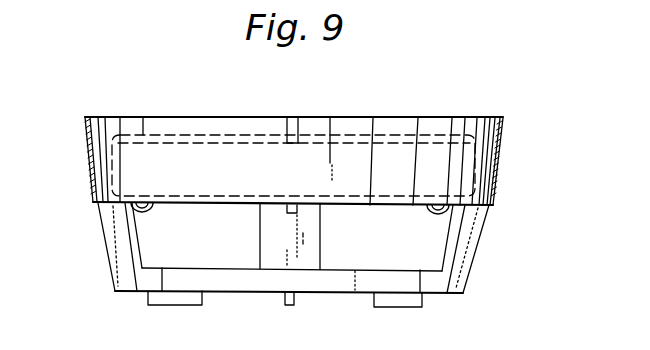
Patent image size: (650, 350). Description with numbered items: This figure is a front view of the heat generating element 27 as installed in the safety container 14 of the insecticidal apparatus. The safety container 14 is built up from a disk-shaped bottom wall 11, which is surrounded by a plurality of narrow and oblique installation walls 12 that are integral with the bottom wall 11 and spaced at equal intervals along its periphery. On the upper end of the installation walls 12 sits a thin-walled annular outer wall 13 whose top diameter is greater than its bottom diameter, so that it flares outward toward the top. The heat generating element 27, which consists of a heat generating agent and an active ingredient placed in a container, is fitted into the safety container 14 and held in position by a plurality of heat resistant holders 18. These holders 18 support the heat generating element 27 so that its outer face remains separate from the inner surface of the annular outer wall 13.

The bottom wall 11 is at (362, 280).
The installation wall 12 is at (108, 247).
The annular outer wall 13 is at (497, 169).
The safety container 14 is at (507, 135).
The heat resistant holder 18 is at (291, 117).
The heat generating element 27 is at (242, 173).